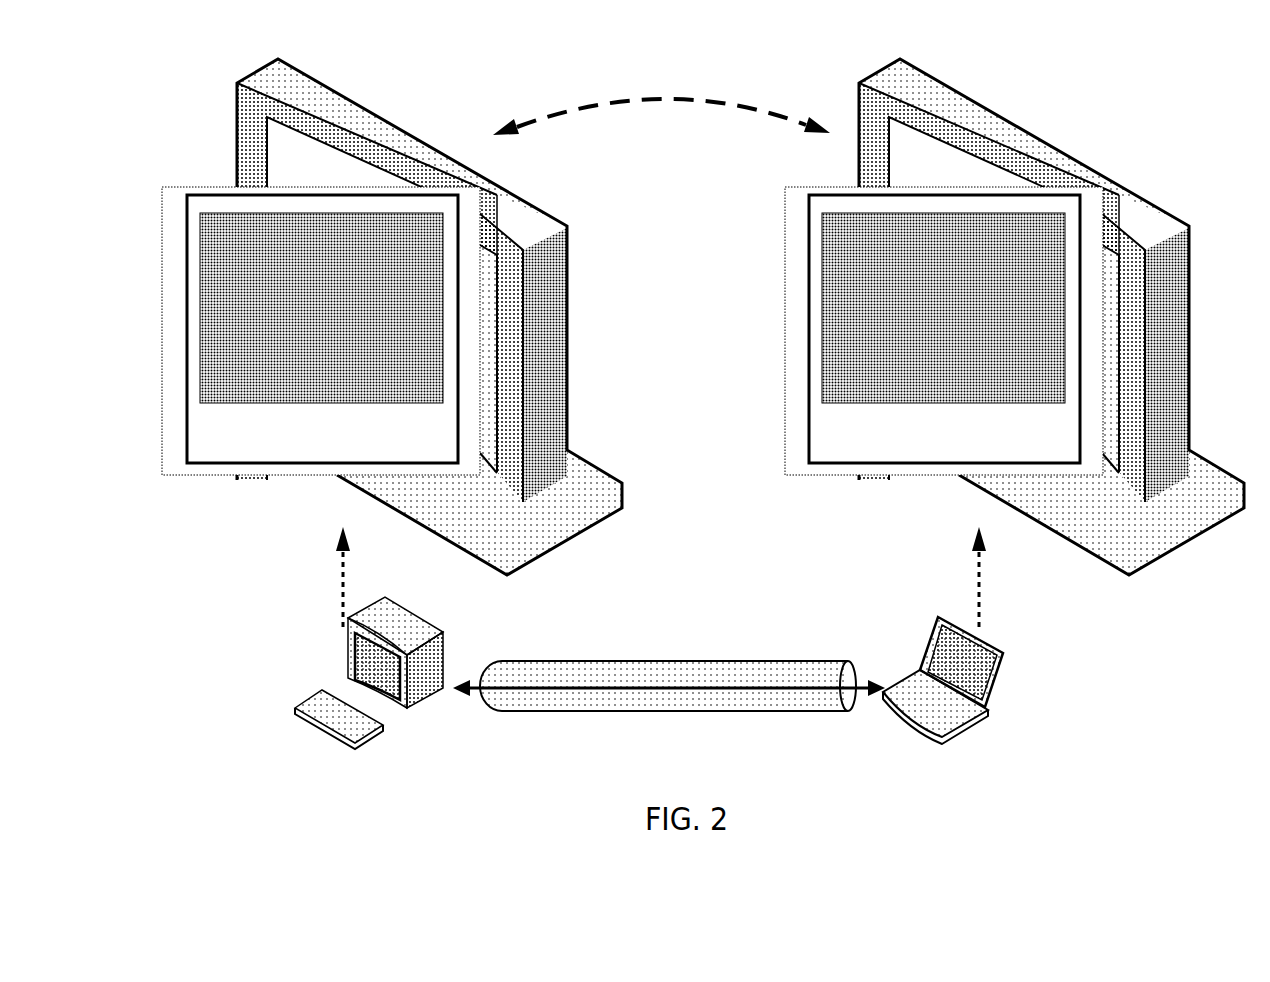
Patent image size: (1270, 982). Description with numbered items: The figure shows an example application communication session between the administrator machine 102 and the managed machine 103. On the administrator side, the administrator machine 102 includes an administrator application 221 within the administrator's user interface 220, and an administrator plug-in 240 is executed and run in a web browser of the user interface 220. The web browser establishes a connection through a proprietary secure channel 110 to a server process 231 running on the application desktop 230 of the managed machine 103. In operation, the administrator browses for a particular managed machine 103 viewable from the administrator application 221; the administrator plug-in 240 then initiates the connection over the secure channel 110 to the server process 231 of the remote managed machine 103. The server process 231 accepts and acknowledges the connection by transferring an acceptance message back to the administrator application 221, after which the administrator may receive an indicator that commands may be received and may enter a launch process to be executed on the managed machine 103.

The user interface 220 is at (205, 450).
The administrator application 221 is at (275, 403).
The application desktop 230 is at (828, 452).
The server process 231 is at (897, 403).
The administrator plug-in 240 is at (661, 147).
The administrator machine 102 is at (447, 650).
The managed machine 103 is at (1003, 653).
The secure channel 110 is at (669, 672).